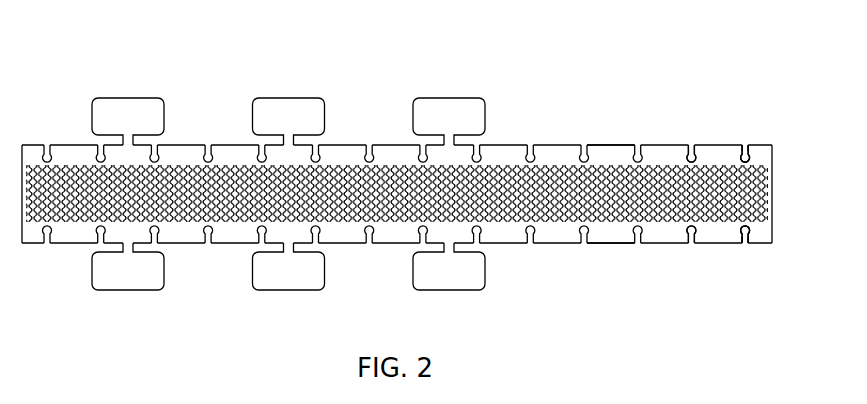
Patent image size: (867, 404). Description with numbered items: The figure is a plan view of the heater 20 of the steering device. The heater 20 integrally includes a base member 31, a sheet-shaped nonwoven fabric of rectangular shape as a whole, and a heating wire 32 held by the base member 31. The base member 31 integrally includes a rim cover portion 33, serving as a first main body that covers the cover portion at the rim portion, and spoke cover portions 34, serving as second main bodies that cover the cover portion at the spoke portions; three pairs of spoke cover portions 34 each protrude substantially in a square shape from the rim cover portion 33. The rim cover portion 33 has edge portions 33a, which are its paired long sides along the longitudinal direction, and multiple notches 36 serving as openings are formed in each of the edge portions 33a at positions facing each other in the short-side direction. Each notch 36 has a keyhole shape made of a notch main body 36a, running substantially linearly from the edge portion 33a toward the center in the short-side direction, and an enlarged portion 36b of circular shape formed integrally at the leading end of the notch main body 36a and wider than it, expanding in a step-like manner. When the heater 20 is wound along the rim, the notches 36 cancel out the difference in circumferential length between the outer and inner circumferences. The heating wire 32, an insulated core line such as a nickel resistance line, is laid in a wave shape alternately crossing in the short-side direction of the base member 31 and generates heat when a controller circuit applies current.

The heater 20 is at (564, 82).
The base member 31 is at (666, 238).
The heating wire 32 is at (568, 227).
The rim cover portion 33 is at (664, 147).
The edge portions 33a is at (608, 146).
The spoke cover portions 34 is at (128, 98).
The notches 36 is at (745, 147).
The notch main body 36a is at (750, 147).
The enlarged portion 36b is at (751, 158).